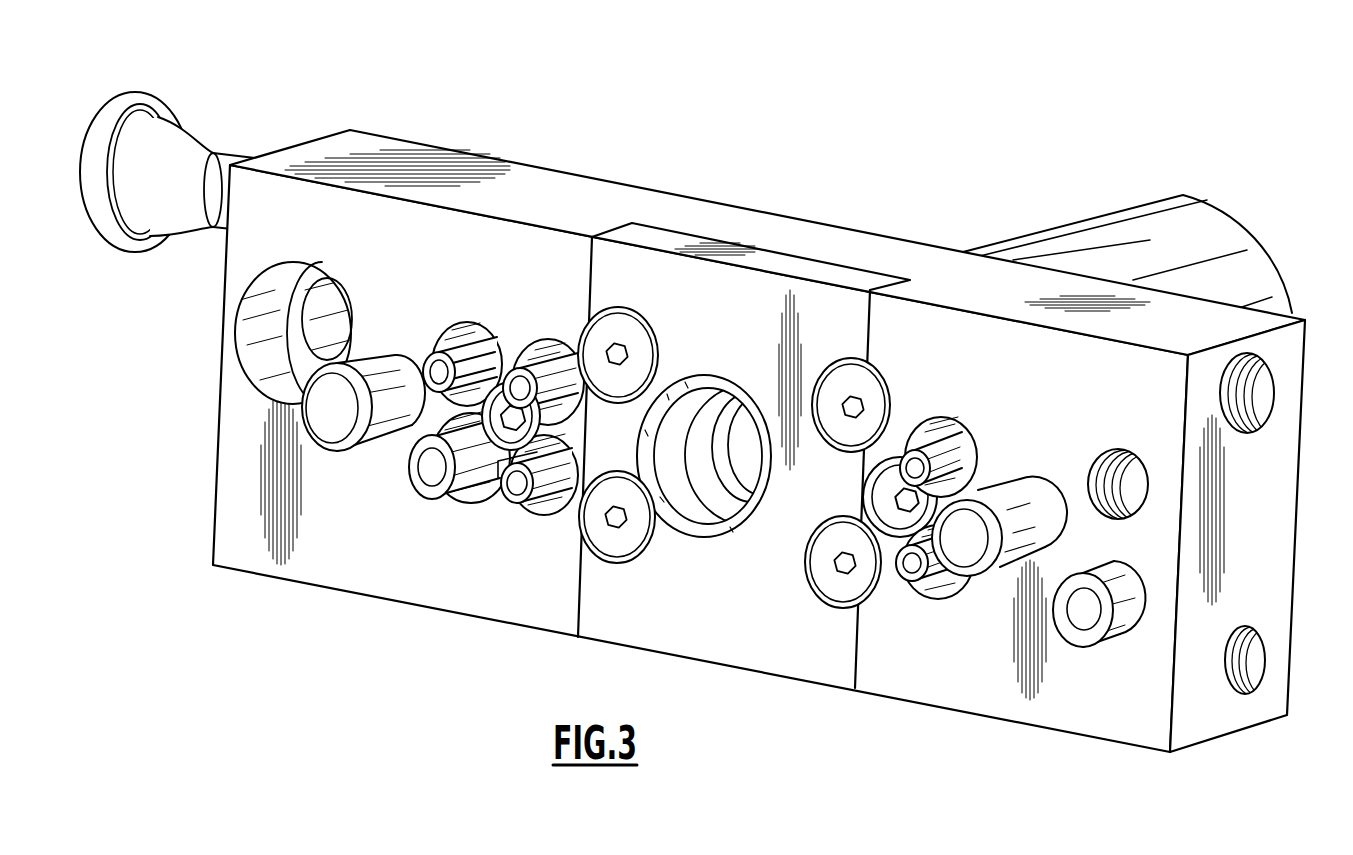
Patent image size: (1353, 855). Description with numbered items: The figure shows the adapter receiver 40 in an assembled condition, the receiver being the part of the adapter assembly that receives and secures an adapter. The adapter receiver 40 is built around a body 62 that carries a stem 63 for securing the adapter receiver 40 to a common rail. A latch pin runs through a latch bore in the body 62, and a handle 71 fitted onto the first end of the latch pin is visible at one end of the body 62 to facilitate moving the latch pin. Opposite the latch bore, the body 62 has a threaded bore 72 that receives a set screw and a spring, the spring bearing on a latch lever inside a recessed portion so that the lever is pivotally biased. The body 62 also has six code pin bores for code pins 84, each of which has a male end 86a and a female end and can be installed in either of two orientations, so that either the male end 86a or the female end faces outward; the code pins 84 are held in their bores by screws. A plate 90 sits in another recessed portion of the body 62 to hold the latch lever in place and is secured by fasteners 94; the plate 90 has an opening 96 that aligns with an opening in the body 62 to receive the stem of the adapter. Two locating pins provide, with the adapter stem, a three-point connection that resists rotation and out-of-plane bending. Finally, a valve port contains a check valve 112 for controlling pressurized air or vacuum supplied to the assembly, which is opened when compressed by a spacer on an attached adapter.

The adapter receiver 40 is at (734, 441).
The body 62 is at (1260, 536).
The stem 63 is at (1081, 226).
The handle 71 is at (160, 100).
The threaded bore 72 is at (1263, 408).
The code pins 84 is at (517, 505).
The male end 86a is at (513, 486).
The plate 90 is at (838, 300).
The fasteners 94 is at (827, 573).
The opening 96 is at (706, 505).
The check valve 112 is at (1116, 643).